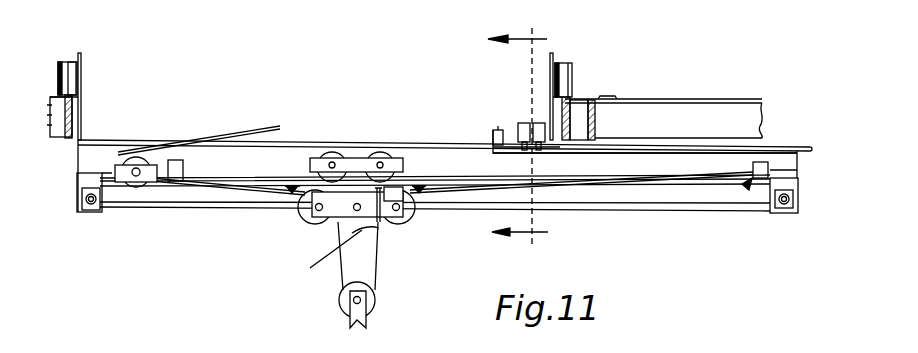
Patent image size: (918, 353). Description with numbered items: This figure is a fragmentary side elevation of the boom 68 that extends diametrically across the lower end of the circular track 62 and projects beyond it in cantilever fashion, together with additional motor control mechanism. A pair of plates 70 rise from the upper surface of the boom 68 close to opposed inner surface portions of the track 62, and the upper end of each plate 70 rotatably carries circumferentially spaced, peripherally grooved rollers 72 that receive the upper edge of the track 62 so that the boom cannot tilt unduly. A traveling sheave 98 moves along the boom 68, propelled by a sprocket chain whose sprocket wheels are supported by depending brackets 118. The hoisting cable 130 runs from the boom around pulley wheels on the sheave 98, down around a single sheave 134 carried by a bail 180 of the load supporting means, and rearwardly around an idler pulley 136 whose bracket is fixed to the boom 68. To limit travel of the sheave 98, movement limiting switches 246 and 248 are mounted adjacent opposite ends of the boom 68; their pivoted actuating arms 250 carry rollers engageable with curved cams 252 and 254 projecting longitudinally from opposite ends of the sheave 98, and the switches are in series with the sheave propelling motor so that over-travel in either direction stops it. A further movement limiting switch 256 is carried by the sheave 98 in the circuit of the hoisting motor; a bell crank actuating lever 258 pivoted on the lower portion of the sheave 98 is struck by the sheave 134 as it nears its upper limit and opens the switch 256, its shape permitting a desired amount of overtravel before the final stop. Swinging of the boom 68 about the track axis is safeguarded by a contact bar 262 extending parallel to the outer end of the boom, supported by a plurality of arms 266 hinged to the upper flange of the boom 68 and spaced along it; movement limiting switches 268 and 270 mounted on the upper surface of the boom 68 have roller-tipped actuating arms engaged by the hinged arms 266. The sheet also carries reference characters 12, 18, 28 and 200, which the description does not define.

The section line 12 is at (524, 139).
The housing 18 is at (678, 120).
The end wall 28 is at (598, 123).
The circular track 62 is at (62, 136).
The boom 68 is at (623, 168).
The supporting plates 70 is at (82, 85).
The rollers 72 is at (66, 62).
The traveling sheave 98 is at (393, 187).
The depending brackets 118 is at (790, 182).
The hoisting cable 130 is at (338, 237).
The single sheave 134 is at (362, 287).
The idler pulley 136 is at (133, 185).
The bail 180 is at (362, 308).
The pin 200 is at (390, 213).
The movement limiting switch 246 is at (173, 160).
The movement limiting switch 248 is at (760, 168).
The actuating arms 250 is at (190, 178).
The actuating cam 252 is at (297, 185).
The actuating cam 254 is at (420, 186).
The movement limiting switch 256 is at (400, 158).
The bell crank actuating lever 258 is at (328, 254).
The contact bar 262 is at (767, 147).
The hinged arms 266 is at (610, 145).
The movement limiting switch 268 is at (538, 122).
The movement limiting switch 270 is at (565, 100).